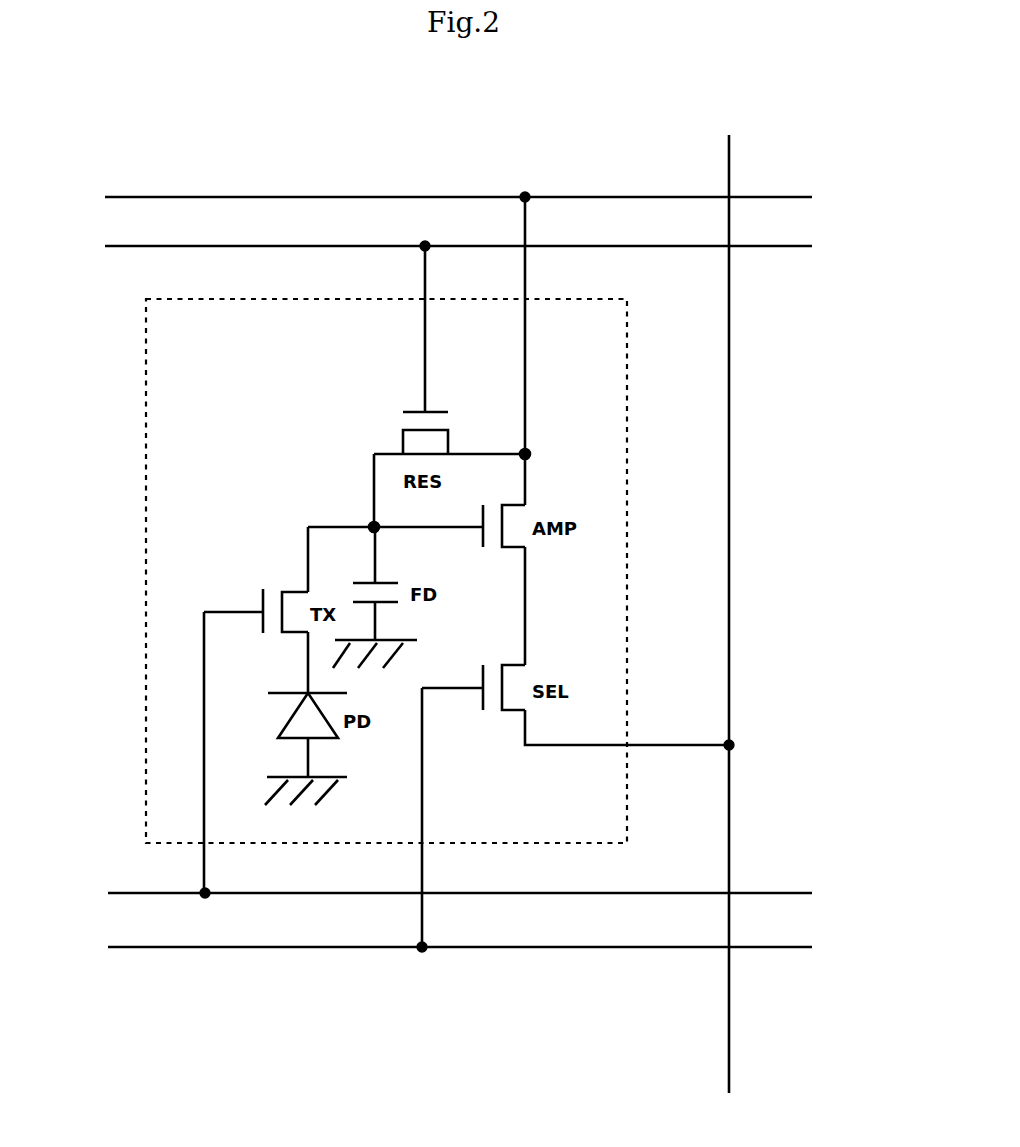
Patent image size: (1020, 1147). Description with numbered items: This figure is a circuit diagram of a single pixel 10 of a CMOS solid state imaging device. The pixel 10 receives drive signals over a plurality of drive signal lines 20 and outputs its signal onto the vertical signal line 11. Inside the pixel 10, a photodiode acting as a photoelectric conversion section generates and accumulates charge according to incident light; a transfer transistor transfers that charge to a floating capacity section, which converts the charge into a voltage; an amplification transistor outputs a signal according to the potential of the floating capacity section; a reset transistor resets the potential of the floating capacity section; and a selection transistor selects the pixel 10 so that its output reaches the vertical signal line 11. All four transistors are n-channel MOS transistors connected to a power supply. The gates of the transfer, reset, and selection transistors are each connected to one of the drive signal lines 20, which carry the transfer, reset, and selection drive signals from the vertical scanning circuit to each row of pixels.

The pixel 10 is at (146, 634).
The vertical signal line 11 is at (729, 590).
The drive signal line 20 is at (88, 228).